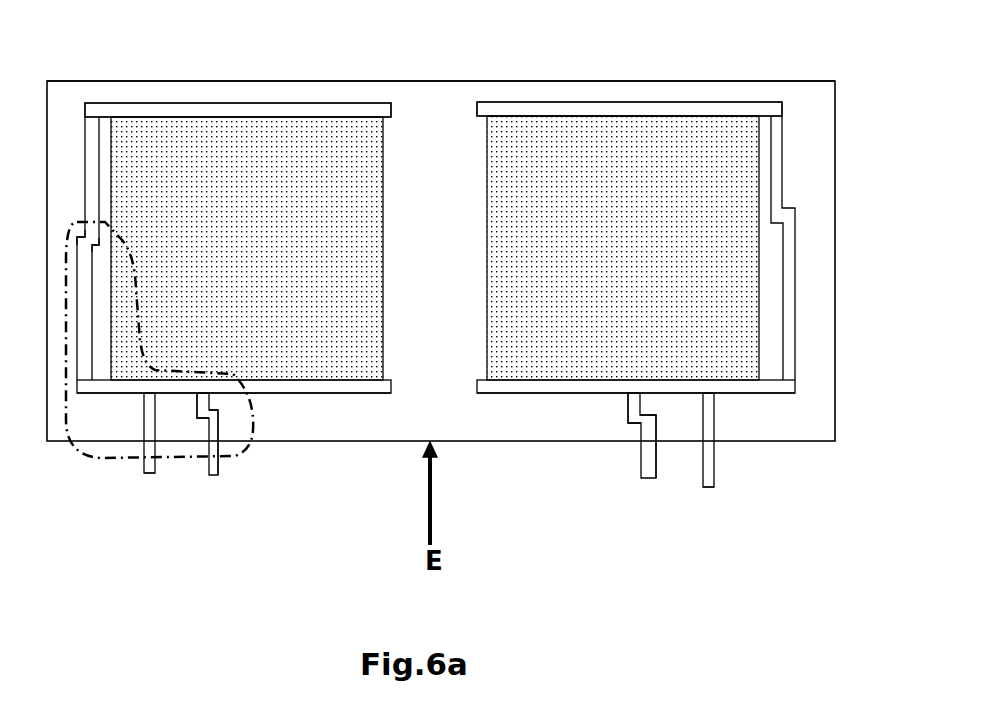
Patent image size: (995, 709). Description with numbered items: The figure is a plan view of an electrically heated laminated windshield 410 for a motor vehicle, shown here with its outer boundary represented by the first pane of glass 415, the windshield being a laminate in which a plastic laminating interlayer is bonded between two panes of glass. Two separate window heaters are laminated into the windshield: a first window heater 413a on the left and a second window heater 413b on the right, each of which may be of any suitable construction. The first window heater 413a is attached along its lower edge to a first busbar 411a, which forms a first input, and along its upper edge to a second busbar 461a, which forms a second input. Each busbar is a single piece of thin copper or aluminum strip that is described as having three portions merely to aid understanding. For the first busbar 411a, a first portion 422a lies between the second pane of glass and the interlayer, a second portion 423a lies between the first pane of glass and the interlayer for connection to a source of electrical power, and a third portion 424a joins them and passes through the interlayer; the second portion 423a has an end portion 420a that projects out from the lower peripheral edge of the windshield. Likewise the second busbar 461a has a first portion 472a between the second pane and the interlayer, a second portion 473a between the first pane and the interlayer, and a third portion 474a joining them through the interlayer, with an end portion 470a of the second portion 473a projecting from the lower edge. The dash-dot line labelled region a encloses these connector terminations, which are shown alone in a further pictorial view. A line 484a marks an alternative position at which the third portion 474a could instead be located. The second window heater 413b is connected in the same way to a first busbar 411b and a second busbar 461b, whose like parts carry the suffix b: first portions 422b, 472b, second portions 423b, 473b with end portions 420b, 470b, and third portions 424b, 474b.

The heated windshield 410 is at (432, 72).
The first pane of glass 415 is at (241, 81).
The second busbar 461a is at (155, 103).
The second busbar 461b is at (702, 102).
The first portion 472a is at (277, 103).
The first portion 472b is at (642, 101).
The line 484a is at (103, 122).
The third portion 474a is at (97, 246).
The third portion 474b is at (783, 225).
The first window heater 413a is at (385, 188).
The second window heater 413b is at (487, 272).
The first busbar 411a is at (300, 394).
The first busbar 411b is at (530, 394).
The first portion 422a is at (346, 394).
The first portion 422b is at (583, 394).
The second portion 473a is at (143, 425).
The second portion 473b is at (760, 455).
The end portion 470a is at (145, 475).
The end portion 470b is at (760, 512).
The end portion 420a is at (217, 477).
The end portion 420b is at (652, 480).
The third portion 424a is at (201, 420).
The third portion 424b is at (627, 420).
The second portion 423a is at (220, 430).
The second portion 423b is at (658, 420).
The region a is at (152, 355).